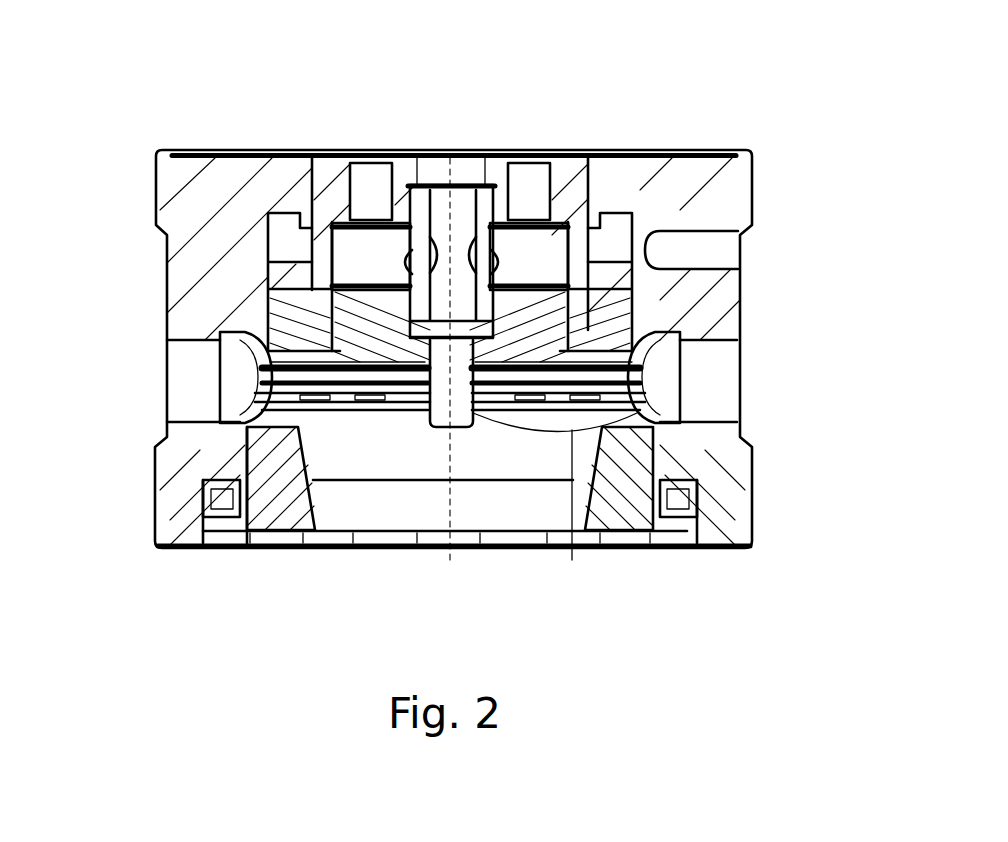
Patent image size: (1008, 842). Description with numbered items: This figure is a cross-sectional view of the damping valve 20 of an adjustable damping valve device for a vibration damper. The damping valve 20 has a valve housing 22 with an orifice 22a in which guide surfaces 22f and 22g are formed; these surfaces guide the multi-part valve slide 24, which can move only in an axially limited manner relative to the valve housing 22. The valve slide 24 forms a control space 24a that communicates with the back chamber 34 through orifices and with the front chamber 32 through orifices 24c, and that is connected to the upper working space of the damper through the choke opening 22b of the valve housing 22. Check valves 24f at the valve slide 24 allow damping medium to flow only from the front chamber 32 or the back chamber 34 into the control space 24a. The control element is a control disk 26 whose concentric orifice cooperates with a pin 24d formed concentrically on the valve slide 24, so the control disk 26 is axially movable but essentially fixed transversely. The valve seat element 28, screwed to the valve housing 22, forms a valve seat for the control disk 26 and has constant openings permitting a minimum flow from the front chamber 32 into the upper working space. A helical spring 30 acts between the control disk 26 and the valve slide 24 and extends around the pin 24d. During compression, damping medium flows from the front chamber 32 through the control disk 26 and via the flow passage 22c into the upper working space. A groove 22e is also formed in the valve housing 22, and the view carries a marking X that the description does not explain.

The damping valve 20 is at (772, 113).
The valve housing 22 is at (706, 197).
The orifice 22a is at (527, 146).
The choke opening 22b is at (653, 252).
The flow passage 22c is at (193, 393).
The groove 22e is at (700, 150).
The guide surface 22f is at (333, 152).
The guide surface 22g is at (330, 305).
The valve slide element 24 is at (378, 200).
The control space 24a is at (402, 269).
The orifices 24c is at (540, 322).
The pin 24d is at (447, 430).
The check valves 24f is at (540, 280).
The control disk 26 is at (600, 398).
The valve seat element 28 is at (620, 505).
The helical spring 30 is at (600, 368).
The front chamber 32 is at (403, 508).
The back chamber 34 is at (386, 139).
The section indicator X is at (569, 512).